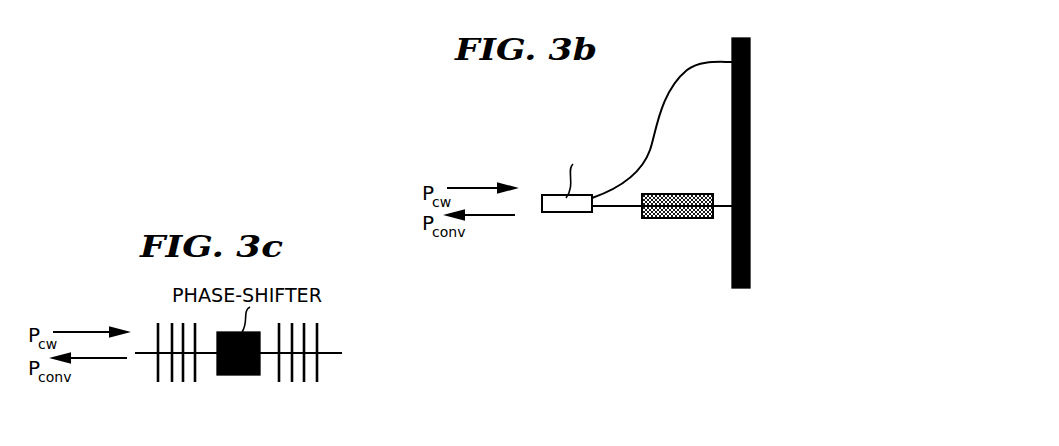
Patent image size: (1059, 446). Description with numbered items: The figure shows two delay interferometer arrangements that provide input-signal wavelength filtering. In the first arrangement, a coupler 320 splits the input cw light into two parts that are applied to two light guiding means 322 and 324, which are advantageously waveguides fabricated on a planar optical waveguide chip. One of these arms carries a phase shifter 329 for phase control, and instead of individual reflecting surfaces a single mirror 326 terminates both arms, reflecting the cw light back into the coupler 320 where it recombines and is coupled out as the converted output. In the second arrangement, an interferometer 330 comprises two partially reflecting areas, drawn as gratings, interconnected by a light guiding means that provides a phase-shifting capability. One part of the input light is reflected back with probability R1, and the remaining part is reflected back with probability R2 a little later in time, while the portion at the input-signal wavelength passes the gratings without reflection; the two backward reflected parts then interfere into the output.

In FIG. 3B, the coupler 320 is at (562, 213).
In FIG. 3B, the light guiding means 322 is at (683, 73).
In FIG. 3B, the light guiding means 324 is at (619, 208).
In FIG. 3B, the mirror 326 is at (751, 143).
In FIG. 3B, the phase shifter 329 is at (663, 193).
In FIG. 3C, the interferometer 330 is at (342, 353).
In FIG. 3C, the reflection probability R1 is at (180, 383).
In FIG. 3C, the reflection probability R2 is at (301, 383).